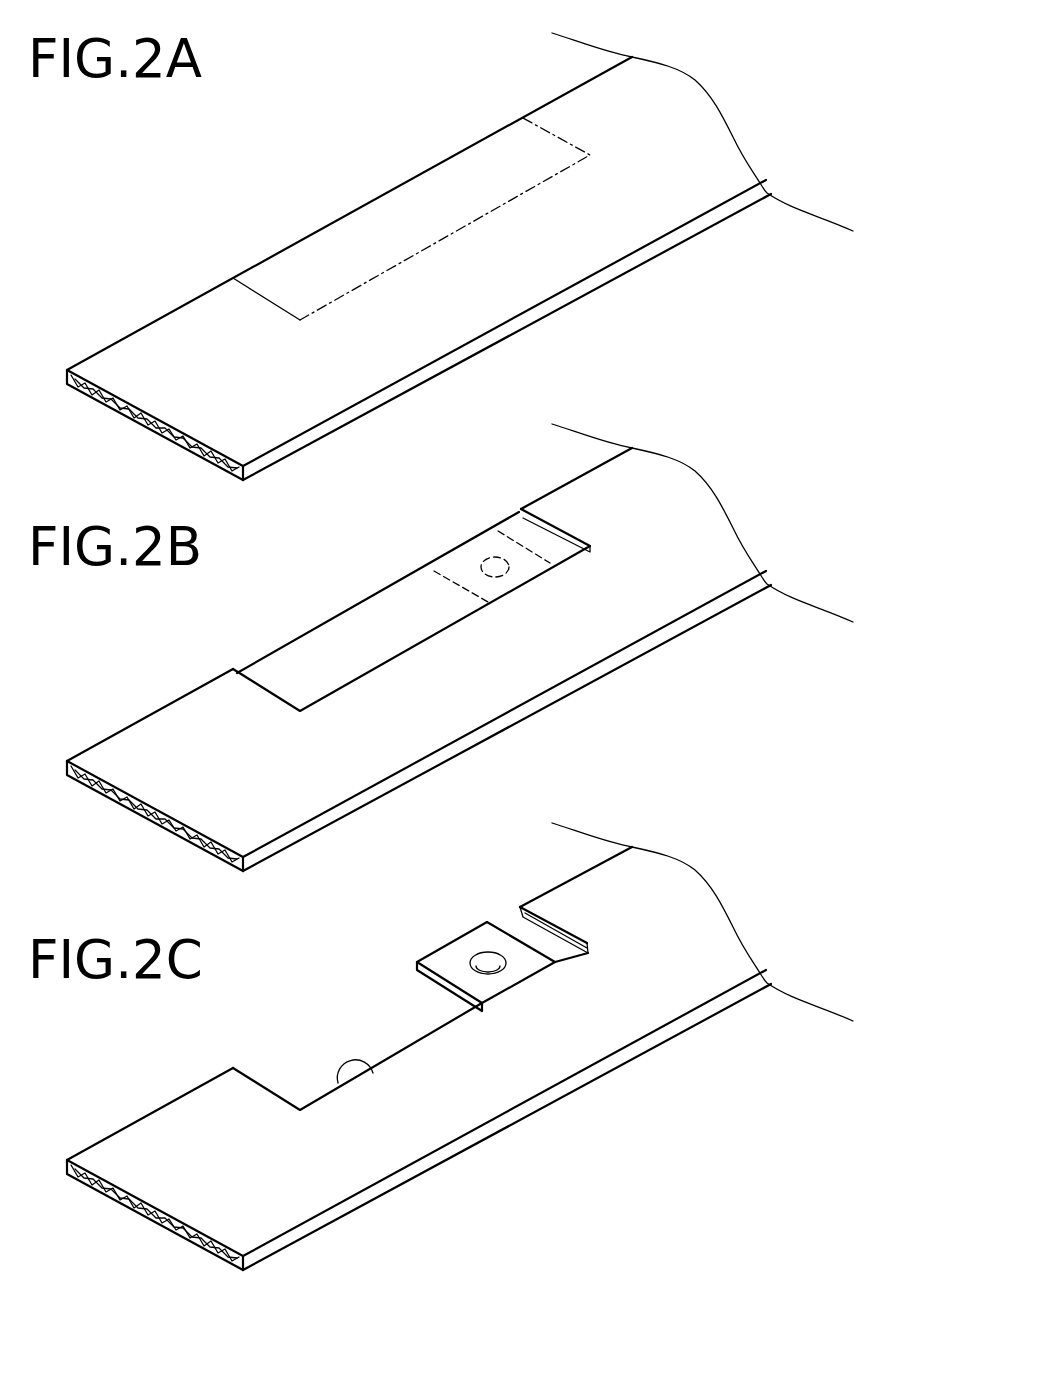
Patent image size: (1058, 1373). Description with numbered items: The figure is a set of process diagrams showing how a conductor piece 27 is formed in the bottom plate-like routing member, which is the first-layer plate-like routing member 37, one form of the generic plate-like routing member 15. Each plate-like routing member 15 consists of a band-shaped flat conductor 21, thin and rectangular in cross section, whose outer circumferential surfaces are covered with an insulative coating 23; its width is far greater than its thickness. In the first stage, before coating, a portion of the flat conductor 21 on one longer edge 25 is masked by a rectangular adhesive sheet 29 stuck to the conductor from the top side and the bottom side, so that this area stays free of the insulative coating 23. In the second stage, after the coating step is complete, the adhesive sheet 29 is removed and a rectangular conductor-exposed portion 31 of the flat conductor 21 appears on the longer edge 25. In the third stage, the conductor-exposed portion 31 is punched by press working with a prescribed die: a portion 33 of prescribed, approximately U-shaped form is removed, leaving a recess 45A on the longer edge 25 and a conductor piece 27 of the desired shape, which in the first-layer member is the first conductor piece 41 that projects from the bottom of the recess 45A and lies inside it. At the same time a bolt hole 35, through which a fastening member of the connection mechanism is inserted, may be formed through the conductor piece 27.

In FIG. 2A, the flat conductor 21 is at (130, 422).
In FIG. 2B, the flat conductor 21 is at (155, 821).
In FIG. 2C, the flat conductor 21 is at (155, 1222).
In FIG. 2A, the insulative coating 23 is at (178, 325).
In FIG. 2B, the insulative coating 23 is at (416, 714).
In FIG. 2C, the insulative coating 23 is at (416, 1113).
In FIG. 2A, the longer edge 25 is at (568, 91).
In FIG. 2B, the longer edge 25 is at (349, 589).
In FIG. 2C, the longer edge 25 is at (349, 985).
In FIG. 2A, the adhesive sheet 29 is at (417, 255).
In FIG. 2B, the conductor-exposed portion 31 is at (463, 534).
In FIG. 2B, the portion 33 is at (411, 576).
In FIG. 2C, the bolt hole 35 is at (474, 908).
In FIG. 2C, the first-layer plate-like routing member 37 is at (507, 1127).
In FIG. 2C, the plate-like routing member 15 is at (507, 1127).
In FIG. 2C, the first conductor piece 41 is at (447, 947).
In FIG. 2C, the conductor piece 27 is at (447, 947).
In FIG. 2C, the recess 45A is at (385, 1168).